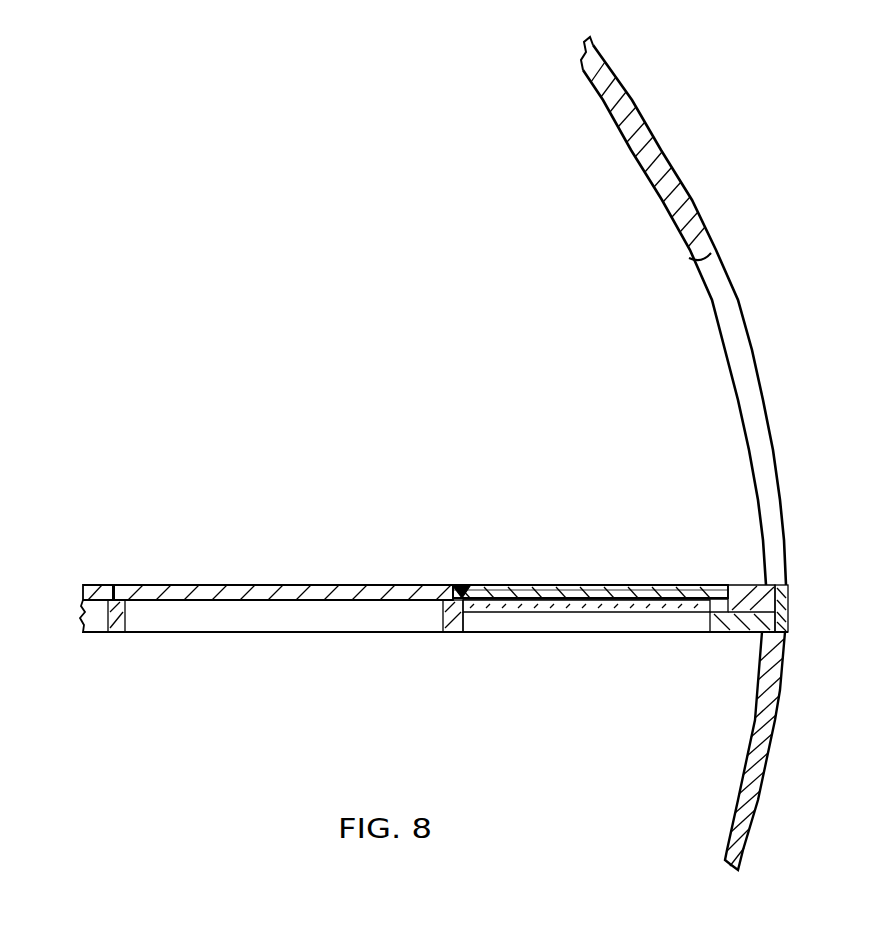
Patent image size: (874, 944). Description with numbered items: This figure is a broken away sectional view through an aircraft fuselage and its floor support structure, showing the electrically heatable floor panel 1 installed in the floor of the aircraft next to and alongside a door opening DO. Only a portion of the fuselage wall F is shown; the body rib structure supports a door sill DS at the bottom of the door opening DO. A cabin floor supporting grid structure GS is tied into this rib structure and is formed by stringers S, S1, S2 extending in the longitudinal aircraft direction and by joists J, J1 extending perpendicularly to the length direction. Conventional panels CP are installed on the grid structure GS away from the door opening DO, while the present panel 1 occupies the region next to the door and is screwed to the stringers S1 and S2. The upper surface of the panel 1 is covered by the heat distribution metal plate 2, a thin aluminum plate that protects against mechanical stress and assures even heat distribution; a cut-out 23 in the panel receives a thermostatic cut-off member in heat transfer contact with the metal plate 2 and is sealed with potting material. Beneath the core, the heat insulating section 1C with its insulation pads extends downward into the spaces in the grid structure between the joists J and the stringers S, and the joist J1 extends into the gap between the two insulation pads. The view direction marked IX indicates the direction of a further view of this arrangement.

The panel 1 is at (648, 572).
The heat distribution metal plate 2 is at (553, 588).
The cut-out 23 is at (515, 600).
The heat insulating section 1C is at (612, 612).
The joist J is at (332, 622).
The joist J1 is at (672, 622).
The stringer S is at (116, 632).
The stringer S1 is at (456, 632).
The stringer S2 is at (732, 632).
The conventional panels CP is at (100, 588).
The grid structure GS is at (268, 643).
The door sill DS is at (768, 585).
The door opening DO is at (738, 331).
The fuselage wall F is at (757, 786).
The section line IX is at (492, 497).